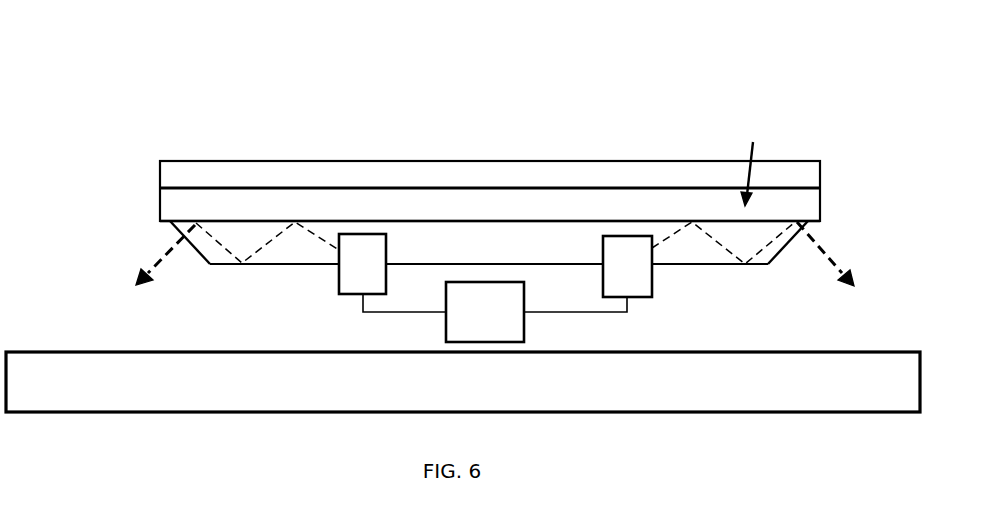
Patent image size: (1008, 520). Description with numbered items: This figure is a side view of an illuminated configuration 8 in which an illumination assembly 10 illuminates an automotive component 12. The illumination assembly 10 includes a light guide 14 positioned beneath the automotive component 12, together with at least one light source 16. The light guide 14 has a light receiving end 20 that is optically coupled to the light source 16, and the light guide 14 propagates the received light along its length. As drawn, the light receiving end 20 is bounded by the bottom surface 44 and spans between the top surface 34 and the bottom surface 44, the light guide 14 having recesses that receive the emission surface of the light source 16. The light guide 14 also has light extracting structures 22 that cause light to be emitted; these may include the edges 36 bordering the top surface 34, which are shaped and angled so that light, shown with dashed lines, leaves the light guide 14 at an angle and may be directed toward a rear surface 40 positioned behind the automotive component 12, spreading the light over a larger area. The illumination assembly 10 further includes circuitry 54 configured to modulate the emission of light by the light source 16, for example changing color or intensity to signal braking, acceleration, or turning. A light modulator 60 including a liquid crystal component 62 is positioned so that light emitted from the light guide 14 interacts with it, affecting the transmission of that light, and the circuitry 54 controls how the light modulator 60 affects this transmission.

The illuminated configuration 8 is at (166, 39).
The illumination assembly 10 is at (188, 202).
The automotive component 12 is at (490, 161).
The light guide 14 is at (515, 238).
The light source 16 is at (363, 263).
The light receiving end 20 is at (338, 253).
The light extracting structures 22 is at (194, 234).
The top surface 34 is at (430, 222).
The edges 36 is at (210, 264).
The rear surface 40 is at (338, 393).
The bottom surface 44 is at (727, 265).
The circuitry 54 is at (495, 324).
The light modulator 60 is at (752, 158).
The liquid crystal component 62 is at (635, 207).